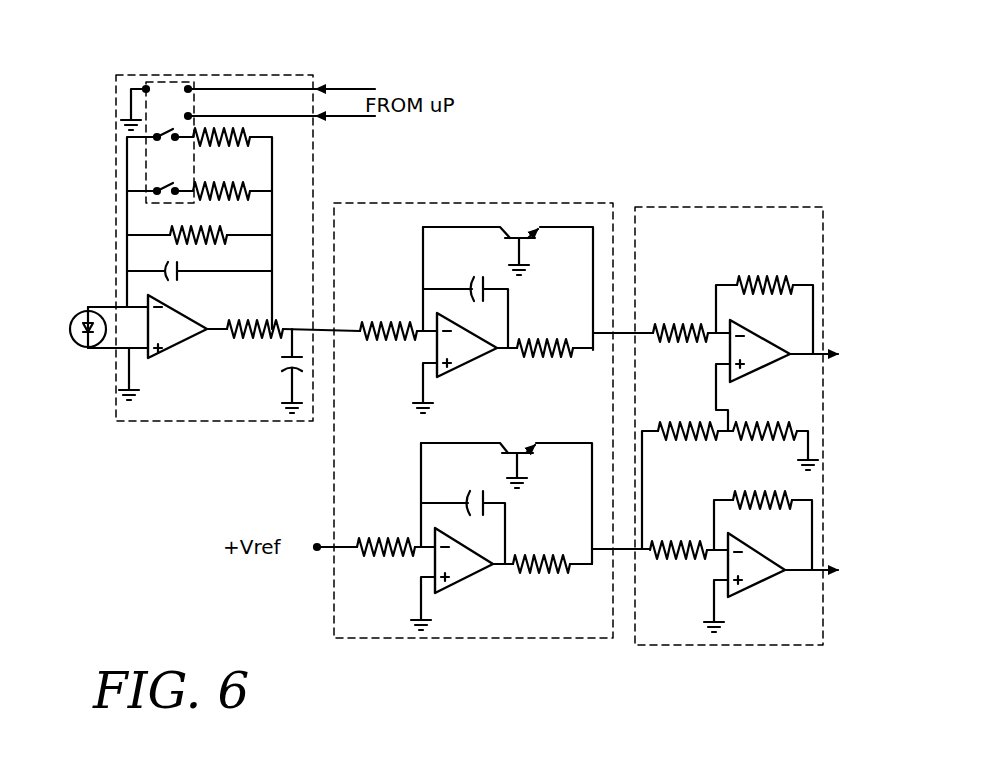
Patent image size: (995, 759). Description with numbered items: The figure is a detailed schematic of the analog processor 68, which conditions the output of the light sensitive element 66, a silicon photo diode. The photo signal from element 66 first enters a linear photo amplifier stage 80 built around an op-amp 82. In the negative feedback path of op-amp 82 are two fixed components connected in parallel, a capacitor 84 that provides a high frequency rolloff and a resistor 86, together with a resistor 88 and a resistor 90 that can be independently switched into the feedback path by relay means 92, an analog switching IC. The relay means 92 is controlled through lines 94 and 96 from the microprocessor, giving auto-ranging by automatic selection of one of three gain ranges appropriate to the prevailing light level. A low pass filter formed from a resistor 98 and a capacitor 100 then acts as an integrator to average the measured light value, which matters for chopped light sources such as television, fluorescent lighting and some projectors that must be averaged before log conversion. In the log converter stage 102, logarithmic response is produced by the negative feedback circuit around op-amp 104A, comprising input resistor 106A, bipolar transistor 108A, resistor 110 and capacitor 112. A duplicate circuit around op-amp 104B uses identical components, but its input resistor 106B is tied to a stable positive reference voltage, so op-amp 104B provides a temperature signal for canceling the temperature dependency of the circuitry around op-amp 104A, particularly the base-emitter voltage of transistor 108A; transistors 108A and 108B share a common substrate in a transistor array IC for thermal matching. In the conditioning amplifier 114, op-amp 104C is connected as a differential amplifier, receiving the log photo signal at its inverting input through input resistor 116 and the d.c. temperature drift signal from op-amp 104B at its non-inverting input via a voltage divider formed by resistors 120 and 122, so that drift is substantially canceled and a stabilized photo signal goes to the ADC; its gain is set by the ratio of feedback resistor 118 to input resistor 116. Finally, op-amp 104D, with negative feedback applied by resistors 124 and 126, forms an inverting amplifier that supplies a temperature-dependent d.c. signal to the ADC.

The light sensitive element 66 is at (62, 317).
The analog processor 68 is at (689, 88).
The linear photo amplifier stage 80 is at (135, 73).
The op-amp 82 is at (163, 363).
The capacitor 84 is at (178, 273).
The resistor 86 is at (202, 240).
The resistor 88 is at (208, 198).
The resistor 90 is at (210, 142).
The relay means 92 is at (163, 87).
The line 94 is at (333, 87).
The line 96 is at (333, 123).
The resistor 98 is at (248, 320).
The capacitor 100 is at (287, 377).
The log converter stage 102 is at (517, 202).
The op-amp 104A is at (457, 382).
The op-amp 104B is at (455, 592).
The op-amp 104C is at (742, 382).
The op-amp 104D is at (740, 602).
The input resistor 106A is at (405, 318).
The input resistor 106B is at (403, 510).
The bipolar transistor 108A is at (508, 288).
The transistor 108B is at (506, 503).
The resistor 110 is at (540, 357).
The capacitor 112 is at (493, 272).
The conditioning amplifier 114 is at (767, 207).
The input resistor 116 is at (690, 327).
The resistor 118 is at (780, 277).
The resistor 120 is at (703, 437).
The resistor 122 is at (770, 437).
The resistor 124 is at (698, 537).
The resistor 126 is at (743, 508).